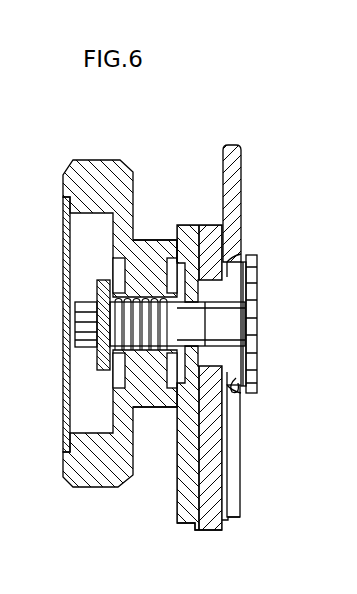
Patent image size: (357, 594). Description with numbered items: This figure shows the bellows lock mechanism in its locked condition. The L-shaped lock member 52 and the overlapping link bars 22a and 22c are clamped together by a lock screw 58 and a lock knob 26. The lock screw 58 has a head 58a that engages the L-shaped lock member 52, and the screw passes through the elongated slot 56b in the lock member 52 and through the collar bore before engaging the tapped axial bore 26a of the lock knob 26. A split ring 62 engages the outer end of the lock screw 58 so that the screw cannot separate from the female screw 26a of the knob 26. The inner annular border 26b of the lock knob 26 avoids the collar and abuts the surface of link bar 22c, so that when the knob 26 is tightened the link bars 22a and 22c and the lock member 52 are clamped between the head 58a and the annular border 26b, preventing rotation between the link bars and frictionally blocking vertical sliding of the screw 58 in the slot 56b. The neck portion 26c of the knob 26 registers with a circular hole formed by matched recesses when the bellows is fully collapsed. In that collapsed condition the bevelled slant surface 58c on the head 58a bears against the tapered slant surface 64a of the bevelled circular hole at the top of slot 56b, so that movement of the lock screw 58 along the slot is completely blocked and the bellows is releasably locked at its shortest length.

The lock knob 26 is at (73, 162).
The tapped axial bore 26a is at (147, 410).
The inner annular border 26b is at (168, 242).
The neck portion 26c is at (138, 240).
The L-shaped lock member 52 is at (229, 143).
The elongated slot 56b is at (228, 473).
The lock screw 58 is at (122, 348).
The head 58a is at (255, 307).
The slant surface 58c is at (233, 386).
The split ring 62 is at (98, 281).
The slant surface 64a is at (257, 253).
The link bar 22a is at (219, 532).
The link bar 22c is at (181, 526).